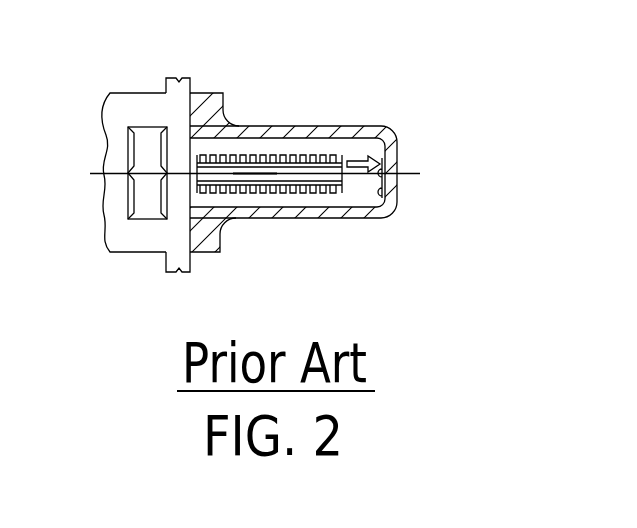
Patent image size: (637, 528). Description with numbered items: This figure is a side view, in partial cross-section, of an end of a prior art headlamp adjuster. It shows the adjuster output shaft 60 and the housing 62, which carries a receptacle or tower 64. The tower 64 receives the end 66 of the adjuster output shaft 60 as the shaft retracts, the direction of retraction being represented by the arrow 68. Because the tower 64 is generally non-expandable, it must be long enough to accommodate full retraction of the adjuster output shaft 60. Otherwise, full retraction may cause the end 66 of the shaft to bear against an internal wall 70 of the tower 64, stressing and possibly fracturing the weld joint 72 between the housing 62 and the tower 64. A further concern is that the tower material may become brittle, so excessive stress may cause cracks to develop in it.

The adjuster output shaft 60 is at (302, 205).
The housing 62 is at (203, 80).
The tower 64 is at (315, 108).
The end of the adjuster output shaft 66 is at (350, 178).
The arrow 68 is at (358, 153).
The internal wall 70 is at (380, 193).
The weld joint 72 is at (190, 252).